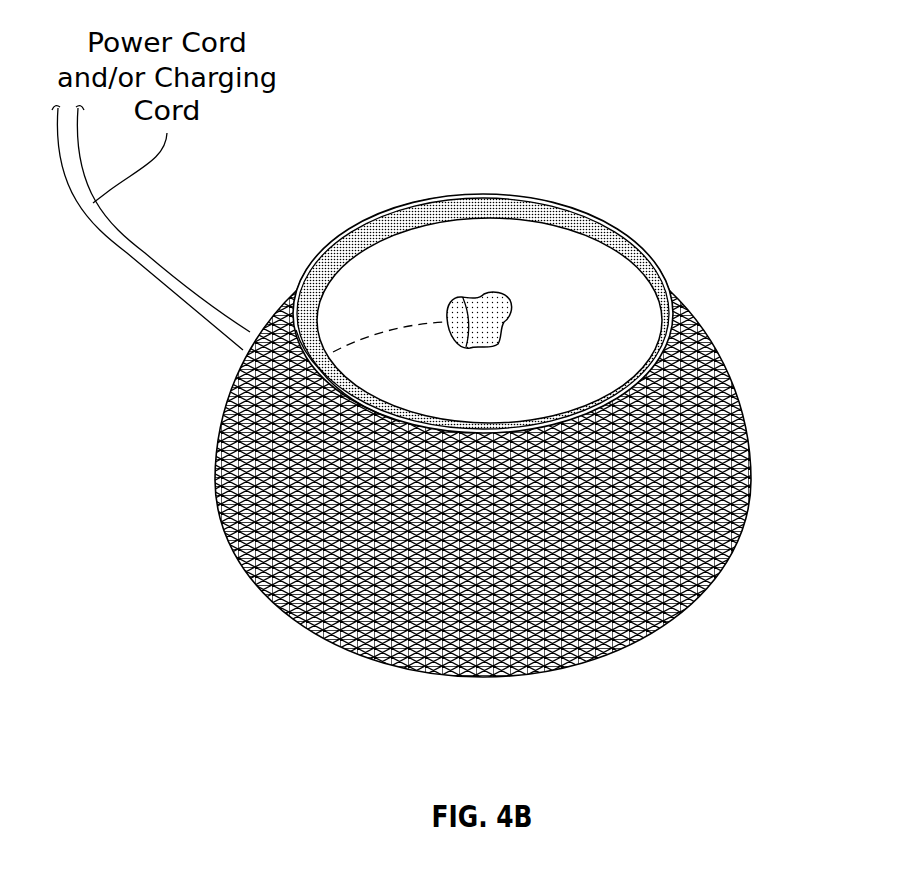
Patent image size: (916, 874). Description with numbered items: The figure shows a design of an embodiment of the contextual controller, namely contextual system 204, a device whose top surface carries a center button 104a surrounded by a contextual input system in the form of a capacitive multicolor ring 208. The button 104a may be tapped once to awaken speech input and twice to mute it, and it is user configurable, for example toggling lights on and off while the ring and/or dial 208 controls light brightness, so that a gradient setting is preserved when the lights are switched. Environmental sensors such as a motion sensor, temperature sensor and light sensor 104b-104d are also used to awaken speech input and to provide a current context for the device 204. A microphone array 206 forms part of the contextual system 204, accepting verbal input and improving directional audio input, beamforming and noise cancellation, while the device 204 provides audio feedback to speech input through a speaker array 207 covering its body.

The contextual system 204 is at (680, 70).
The button 104a is at (403, 257).
The motion sensor, temperature sensor, and light sensor 104b-104d is at (313, 363).
The microphone array 206 is at (350, 402).
The speaker array 207 is at (728, 478).
The capacitive multicolor ring 208 is at (550, 214).